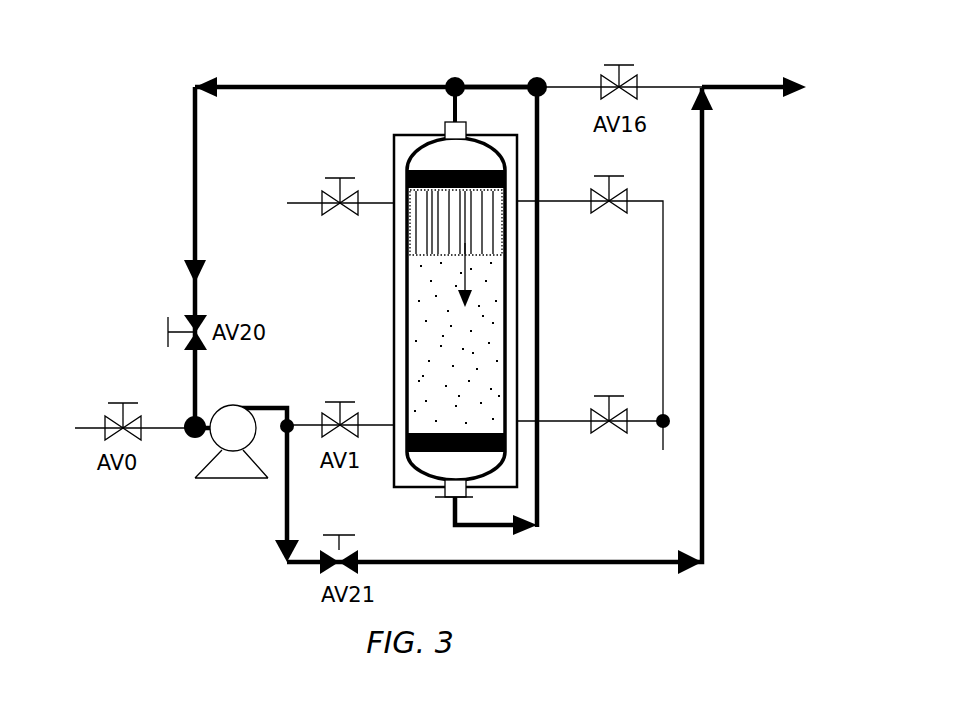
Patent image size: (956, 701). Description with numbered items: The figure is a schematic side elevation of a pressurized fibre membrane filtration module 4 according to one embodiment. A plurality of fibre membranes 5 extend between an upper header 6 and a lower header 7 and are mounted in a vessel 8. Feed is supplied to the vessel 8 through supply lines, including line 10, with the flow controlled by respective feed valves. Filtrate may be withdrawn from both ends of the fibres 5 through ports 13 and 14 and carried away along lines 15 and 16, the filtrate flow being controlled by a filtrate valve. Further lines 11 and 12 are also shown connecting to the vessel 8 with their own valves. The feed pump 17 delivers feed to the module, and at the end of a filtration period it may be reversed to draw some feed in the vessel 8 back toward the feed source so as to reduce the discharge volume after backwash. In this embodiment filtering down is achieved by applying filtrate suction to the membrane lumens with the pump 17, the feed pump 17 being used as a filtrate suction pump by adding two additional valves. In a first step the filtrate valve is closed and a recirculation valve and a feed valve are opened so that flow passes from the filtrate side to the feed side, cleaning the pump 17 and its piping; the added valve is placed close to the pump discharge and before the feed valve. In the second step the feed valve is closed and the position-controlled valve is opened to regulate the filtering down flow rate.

The pressurized fibre membrane filtration module 4 is at (394, 327).
The fibre membranes 5 is at (443, 228).
The upper header 6 is at (470, 168).
The lower header 7 is at (423, 450).
The vessel 8 is at (394, 150).
The line 10 is at (380, 201).
The outlet line with valve AV5 11 is at (570, 201).
The outlet line with valve AV4 12 is at (553, 422).
The port 13 is at (447, 128).
The port 14 is at (435, 497).
The line 15 is at (487, 86).
The line 16 is at (538, 330).
The feed pump 17 is at (228, 473).